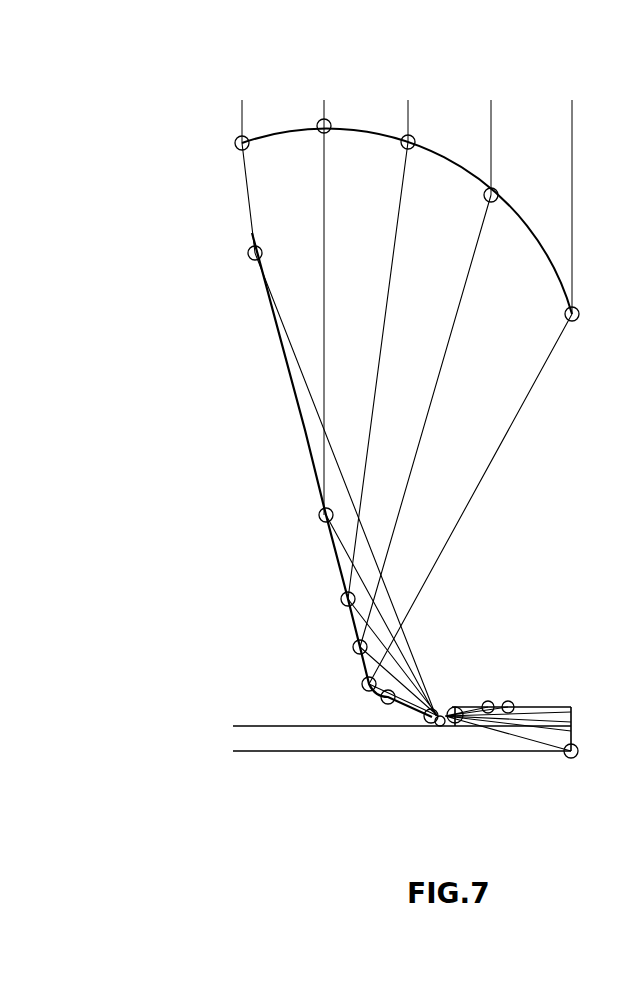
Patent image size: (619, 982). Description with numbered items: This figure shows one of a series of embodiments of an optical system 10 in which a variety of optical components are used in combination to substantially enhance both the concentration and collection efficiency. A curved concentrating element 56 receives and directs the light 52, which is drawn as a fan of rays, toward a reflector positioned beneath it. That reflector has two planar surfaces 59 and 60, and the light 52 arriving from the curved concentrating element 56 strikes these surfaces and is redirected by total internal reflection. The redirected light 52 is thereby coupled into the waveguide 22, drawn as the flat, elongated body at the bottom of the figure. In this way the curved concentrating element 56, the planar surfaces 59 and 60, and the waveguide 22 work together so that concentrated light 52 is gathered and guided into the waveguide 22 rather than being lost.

The truck tailgate ramp system 10 is at (158, 152).
The waveguide 22 is at (478, 737).
The light 52 is at (497, 450).
The curved concentrating element 56 is at (350, 127).
The planar surface 59 is at (305, 442).
The planar surface 60 is at (414, 709).